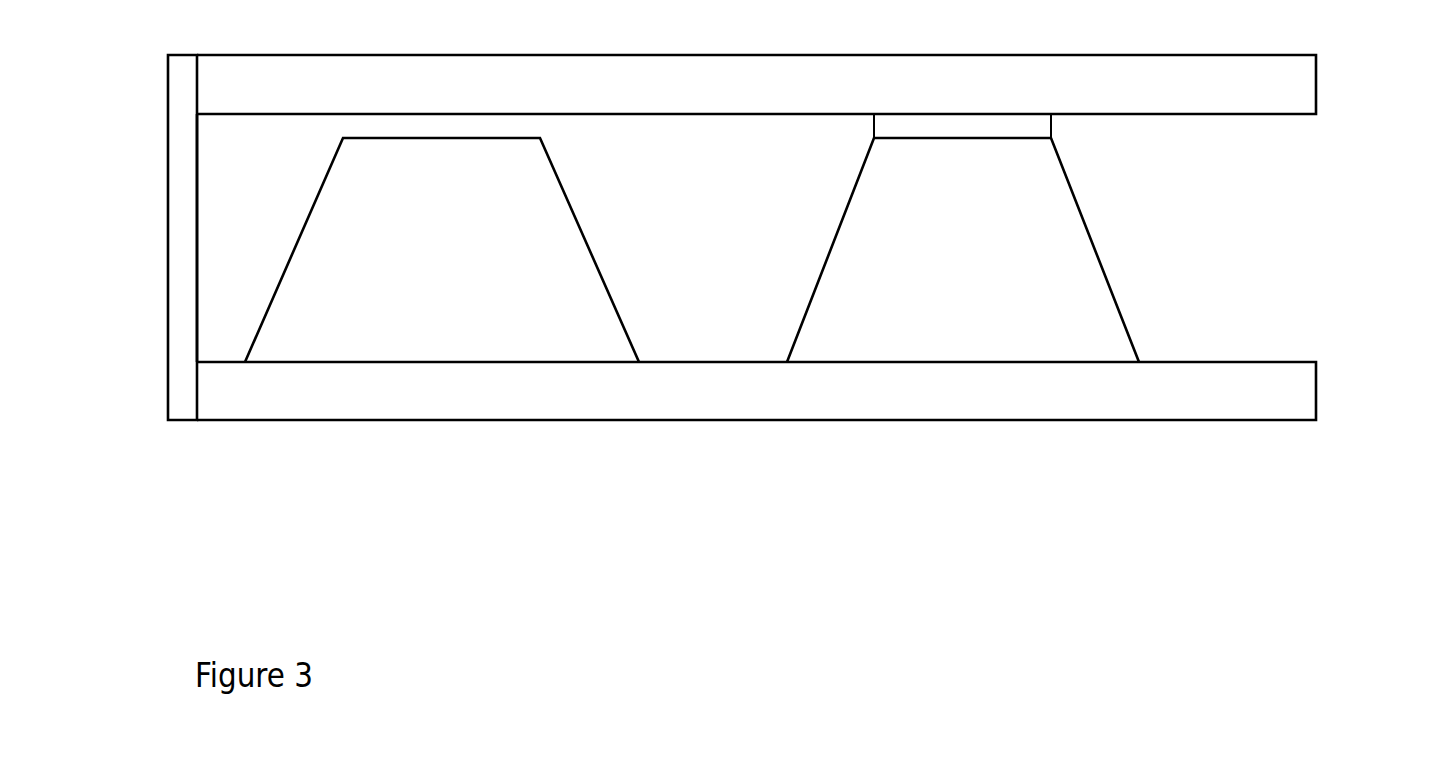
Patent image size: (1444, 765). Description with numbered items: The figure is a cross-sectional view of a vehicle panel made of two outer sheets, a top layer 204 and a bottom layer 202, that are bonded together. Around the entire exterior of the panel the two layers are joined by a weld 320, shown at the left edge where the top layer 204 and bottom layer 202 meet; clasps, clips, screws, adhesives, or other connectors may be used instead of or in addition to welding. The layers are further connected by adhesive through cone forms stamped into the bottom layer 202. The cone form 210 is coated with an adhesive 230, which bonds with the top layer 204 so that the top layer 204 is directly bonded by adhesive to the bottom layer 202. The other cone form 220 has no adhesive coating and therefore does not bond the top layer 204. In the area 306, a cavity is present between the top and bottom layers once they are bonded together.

The top layer 204 is at (1316, 83).
The bottom layer 202 is at (1316, 392).
The weld 320 is at (167, 93).
The area 306 is at (248, 220).
The cone form 220 is at (603, 274).
The cone form 210 is at (1103, 272).
The adhesive 230 is at (1053, 120).